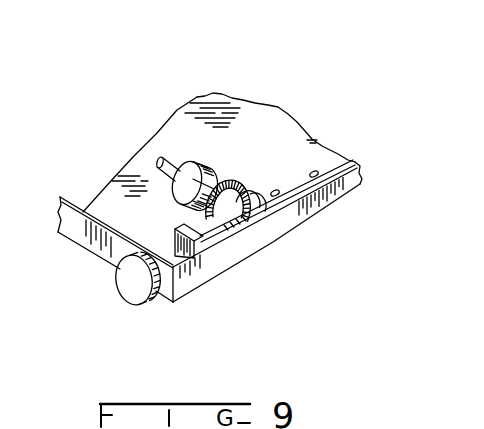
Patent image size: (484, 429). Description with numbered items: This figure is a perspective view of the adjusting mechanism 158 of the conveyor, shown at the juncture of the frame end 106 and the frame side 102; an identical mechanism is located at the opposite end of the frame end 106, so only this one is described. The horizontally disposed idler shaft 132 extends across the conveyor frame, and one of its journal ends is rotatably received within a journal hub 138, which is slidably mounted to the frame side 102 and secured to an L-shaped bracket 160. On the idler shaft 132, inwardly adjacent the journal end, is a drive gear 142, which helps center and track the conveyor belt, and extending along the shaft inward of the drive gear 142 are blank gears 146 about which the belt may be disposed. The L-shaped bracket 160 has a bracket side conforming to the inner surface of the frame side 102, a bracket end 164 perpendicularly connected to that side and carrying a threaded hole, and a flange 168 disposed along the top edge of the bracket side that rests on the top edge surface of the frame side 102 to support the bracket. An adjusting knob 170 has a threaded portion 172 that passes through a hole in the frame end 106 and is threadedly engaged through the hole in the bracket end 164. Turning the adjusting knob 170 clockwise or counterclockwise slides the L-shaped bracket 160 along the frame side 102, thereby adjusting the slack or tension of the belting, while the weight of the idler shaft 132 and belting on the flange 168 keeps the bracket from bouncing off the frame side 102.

The frame side 102 is at (268, 236).
The frame end 106 is at (80, 246).
The idler shaft 132 is at (163, 158).
The journal hub 138 is at (260, 190).
The drive gear 142 is at (241, 186).
The blank gear 146 is at (173, 193).
The adjusting mechanism 158 is at (178, 92).
The L-shaped bracket 160 is at (276, 190).
The bracket end 164 is at (202, 254).
The flange 168 is at (315, 173).
The adjusting knob 170 is at (131, 286).
The threaded portion 172 is at (173, 240).